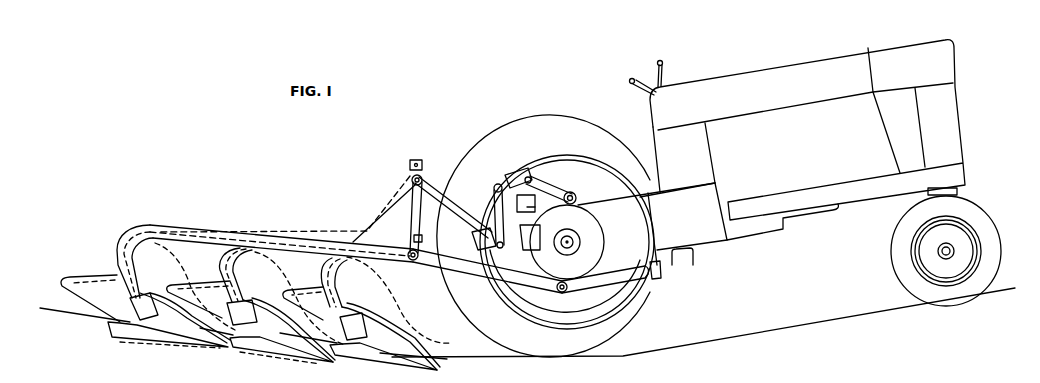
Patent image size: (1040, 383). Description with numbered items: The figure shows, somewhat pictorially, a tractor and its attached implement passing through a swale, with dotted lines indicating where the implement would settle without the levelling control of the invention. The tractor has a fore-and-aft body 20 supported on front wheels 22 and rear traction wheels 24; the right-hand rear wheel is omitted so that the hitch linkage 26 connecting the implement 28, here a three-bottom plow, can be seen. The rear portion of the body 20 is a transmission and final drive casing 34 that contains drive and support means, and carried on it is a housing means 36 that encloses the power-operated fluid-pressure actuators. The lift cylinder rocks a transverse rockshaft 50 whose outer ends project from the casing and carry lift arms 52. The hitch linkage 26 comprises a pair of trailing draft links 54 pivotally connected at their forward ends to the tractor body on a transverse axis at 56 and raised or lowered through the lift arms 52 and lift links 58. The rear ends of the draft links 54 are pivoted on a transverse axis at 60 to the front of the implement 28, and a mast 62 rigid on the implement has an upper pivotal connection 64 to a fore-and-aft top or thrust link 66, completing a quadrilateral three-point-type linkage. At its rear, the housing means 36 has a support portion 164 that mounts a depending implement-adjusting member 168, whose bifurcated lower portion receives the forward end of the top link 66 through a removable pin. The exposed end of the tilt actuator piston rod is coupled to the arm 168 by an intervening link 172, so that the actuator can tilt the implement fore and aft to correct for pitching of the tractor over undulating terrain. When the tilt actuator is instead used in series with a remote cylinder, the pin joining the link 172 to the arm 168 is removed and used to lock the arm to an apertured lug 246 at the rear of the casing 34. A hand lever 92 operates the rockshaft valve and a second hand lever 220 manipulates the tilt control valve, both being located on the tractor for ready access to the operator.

The fore-and-aft body 20 is at (774, 233).
The front wheels 22 is at (992, 263).
The rear traction wheels 24 is at (658, 323).
The hitch linkage 26 is at (413, 219).
The implement 28 is at (208, 233).
The transmission and final drive casing 34 is at (653, 268).
The housing means 36 is at (581, 175).
The rockshaft 50 is at (578, 200).
The lift arms 52 is at (563, 186).
The trailing draft links 54 is at (525, 280).
The transverse axis 56 is at (563, 289).
The lift links 58 is at (476, 241).
The transverse axis 60 is at (409, 258).
The mast 62 is at (411, 190).
The upper pivotal connection 64 is at (413, 178).
The top or thrust link 66 is at (434, 190).
The hand lever 92 is at (632, 78).
The support portion 164 is at (507, 172).
The implement-adjusting member 168 is at (494, 185).
The link 172 is at (537, 215).
The hand lever 220 is at (662, 61).
The apertured lug 246 is at (529, 245).